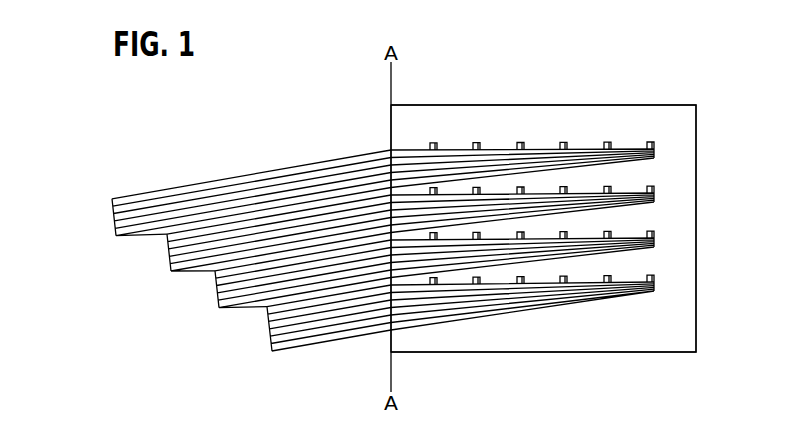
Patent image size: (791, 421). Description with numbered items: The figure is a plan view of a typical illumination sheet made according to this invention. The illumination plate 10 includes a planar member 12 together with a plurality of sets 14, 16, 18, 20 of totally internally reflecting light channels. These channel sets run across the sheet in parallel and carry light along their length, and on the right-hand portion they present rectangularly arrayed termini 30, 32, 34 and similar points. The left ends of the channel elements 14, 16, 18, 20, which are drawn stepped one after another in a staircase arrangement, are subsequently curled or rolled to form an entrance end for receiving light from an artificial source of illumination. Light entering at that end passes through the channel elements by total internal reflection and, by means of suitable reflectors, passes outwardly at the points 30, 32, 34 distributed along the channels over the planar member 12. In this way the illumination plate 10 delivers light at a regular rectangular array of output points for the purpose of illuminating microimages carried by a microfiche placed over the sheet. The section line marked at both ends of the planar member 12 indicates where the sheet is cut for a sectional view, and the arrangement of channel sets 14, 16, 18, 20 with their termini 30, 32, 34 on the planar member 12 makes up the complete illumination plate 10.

The illumination plate 10 is at (664, 86).
The planar member 12 is at (688, 206).
The set of totally internally reflecting light channels 14 is at (466, 329).
The set of totally internally reflecting light channels 16 is at (427, 274).
The set of totally internally reflecting light channels 18 is at (181, 264).
The set of totally internally reflecting light channels 20 is at (131, 218).
The terminus 30 is at (656, 282).
The terminus 32 is at (609, 284).
The terminus 34 is at (609, 233).